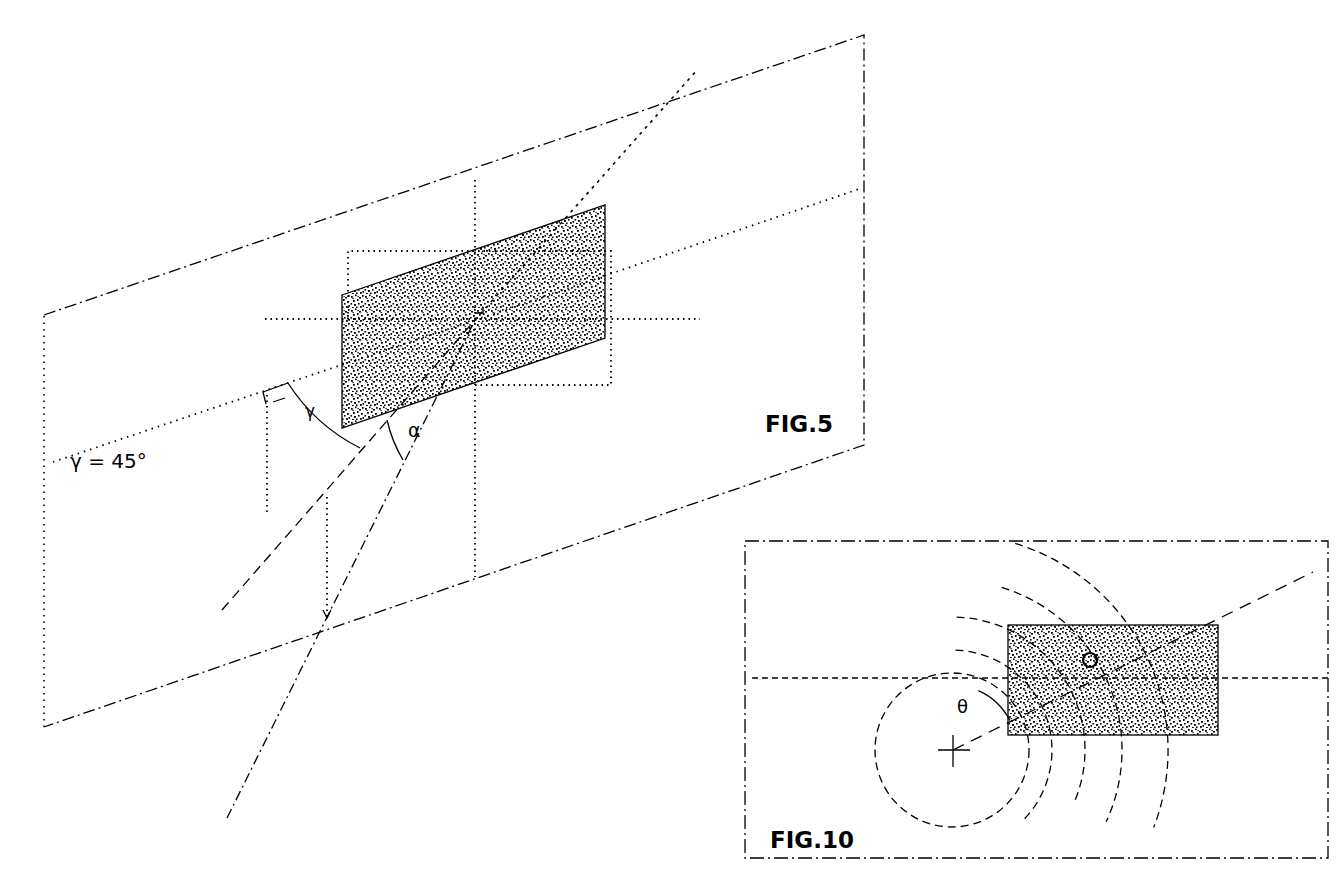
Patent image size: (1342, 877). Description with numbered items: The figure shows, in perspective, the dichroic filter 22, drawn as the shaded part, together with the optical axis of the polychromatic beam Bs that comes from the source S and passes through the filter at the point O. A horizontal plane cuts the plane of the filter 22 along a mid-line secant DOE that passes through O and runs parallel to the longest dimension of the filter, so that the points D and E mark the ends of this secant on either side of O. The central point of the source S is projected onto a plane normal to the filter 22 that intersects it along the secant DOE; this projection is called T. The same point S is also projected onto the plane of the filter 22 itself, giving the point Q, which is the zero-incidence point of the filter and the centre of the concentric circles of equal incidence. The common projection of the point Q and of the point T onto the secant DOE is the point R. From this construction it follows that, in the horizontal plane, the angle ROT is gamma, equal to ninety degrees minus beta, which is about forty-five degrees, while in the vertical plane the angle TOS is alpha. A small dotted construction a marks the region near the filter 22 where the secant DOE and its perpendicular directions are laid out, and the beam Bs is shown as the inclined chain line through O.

In FIG. 5, the dichroic filter 22 is at (577, 238).
In FIG. 10, the dichroic filter 22 is at (1150, 647).
In FIG. 5, the point O is at (482, 378).
In FIG. 10, the point O is at (1090, 660).
In FIG. 5, the point D of secant DOE D is at (264, 391).
In FIG. 10, the point D of secant DOE D is at (1004, 734).
In FIG. 5, the point E of secant DOE E is at (668, 254).
In FIG. 10, the point E of secant DOE E is at (1040, 678).
In FIG. 5, the point Q is at (251, 458).
In FIG. 10, the point Q is at (1094, 699).
In FIG. 5, the point R is at (261, 389).
In FIG. 5, the source S is at (318, 589).
In FIG. 5, the point T is at (316, 522).
In FIG. 5, the dimension a of magnet a is at (368, 257).
In FIG. 5, the polychromatic beam Bs is at (357, 555).